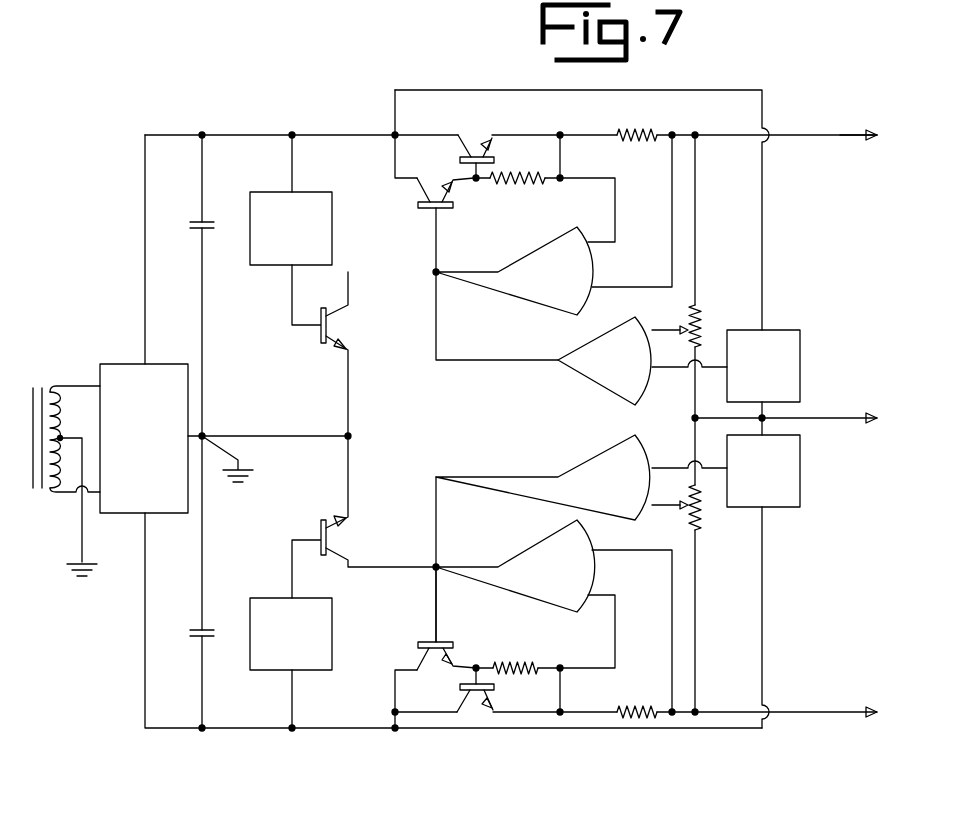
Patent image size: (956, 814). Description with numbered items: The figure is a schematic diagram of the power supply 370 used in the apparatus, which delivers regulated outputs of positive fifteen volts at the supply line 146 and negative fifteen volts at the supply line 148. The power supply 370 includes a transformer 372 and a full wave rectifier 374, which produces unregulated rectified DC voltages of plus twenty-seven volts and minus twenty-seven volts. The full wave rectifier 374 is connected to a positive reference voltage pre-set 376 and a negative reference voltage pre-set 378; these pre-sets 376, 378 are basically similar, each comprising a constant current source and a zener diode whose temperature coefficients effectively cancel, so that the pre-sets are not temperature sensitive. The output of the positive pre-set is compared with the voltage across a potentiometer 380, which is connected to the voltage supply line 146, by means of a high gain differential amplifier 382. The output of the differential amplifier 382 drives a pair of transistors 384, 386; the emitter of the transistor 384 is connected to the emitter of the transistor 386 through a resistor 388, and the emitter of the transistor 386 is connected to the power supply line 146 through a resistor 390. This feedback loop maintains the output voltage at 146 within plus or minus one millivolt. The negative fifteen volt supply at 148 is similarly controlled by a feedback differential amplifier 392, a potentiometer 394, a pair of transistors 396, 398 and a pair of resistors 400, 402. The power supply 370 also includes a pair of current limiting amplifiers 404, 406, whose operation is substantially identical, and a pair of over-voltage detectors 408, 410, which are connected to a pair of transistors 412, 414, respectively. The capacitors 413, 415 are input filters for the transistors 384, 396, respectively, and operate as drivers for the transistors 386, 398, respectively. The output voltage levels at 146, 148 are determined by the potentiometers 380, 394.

The power supply 370 is at (163, 78).
The positive voltage supply line 146 is at (868, 132).
The negative voltage supply line 148 is at (838, 710).
The transformer 372 is at (46, 378).
The full wave rectifier 374 is at (128, 386).
The positive reference voltage pre-set 376 is at (790, 354).
The negative reference voltage pre-set 378 is at (792, 461).
The potentiometer 380 is at (700, 312).
The high gain differential amplifier 382 is at (602, 384).
The transistor 384 is at (421, 218).
The transistor 386 is at (476, 152).
The resistor 388 is at (512, 192).
The resistor 390 is at (640, 142).
The feedback differential amplifier 392 is at (602, 452).
The potentiometer 394 is at (700, 520).
The transistor 396 is at (450, 640).
The transistor 398 is at (477, 700).
The resistor 400 is at (522, 662).
The resistor 402 is at (638, 704).
The current limiting amplifier 404 is at (578, 269).
The current limiting amplifier 406 is at (578, 577).
The over-voltage detector 408 is at (278, 248).
The over-voltage detector 410 is at (272, 612).
The transistor 412 is at (312, 342).
The capacitor 413 is at (200, 232).
The transistor 414 is at (318, 528).
The capacitor 415 is at (200, 636).